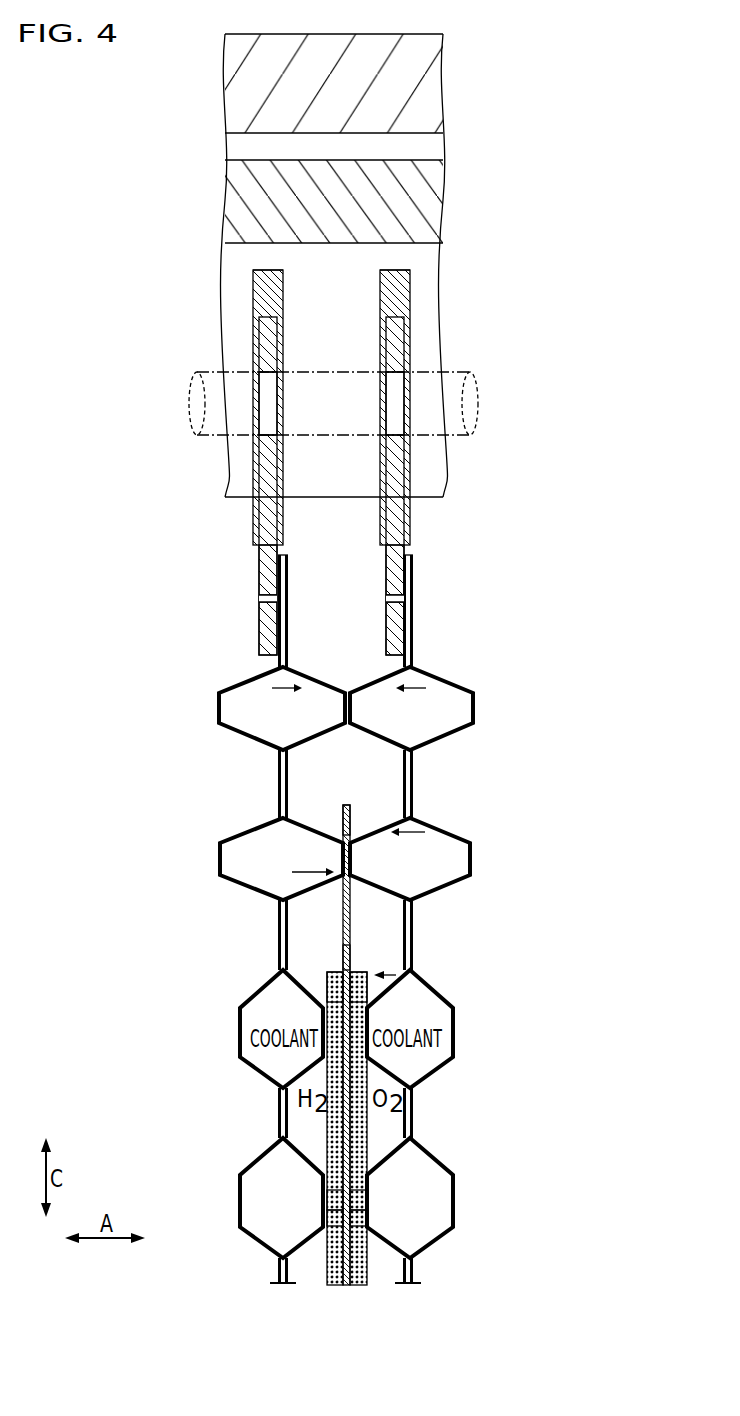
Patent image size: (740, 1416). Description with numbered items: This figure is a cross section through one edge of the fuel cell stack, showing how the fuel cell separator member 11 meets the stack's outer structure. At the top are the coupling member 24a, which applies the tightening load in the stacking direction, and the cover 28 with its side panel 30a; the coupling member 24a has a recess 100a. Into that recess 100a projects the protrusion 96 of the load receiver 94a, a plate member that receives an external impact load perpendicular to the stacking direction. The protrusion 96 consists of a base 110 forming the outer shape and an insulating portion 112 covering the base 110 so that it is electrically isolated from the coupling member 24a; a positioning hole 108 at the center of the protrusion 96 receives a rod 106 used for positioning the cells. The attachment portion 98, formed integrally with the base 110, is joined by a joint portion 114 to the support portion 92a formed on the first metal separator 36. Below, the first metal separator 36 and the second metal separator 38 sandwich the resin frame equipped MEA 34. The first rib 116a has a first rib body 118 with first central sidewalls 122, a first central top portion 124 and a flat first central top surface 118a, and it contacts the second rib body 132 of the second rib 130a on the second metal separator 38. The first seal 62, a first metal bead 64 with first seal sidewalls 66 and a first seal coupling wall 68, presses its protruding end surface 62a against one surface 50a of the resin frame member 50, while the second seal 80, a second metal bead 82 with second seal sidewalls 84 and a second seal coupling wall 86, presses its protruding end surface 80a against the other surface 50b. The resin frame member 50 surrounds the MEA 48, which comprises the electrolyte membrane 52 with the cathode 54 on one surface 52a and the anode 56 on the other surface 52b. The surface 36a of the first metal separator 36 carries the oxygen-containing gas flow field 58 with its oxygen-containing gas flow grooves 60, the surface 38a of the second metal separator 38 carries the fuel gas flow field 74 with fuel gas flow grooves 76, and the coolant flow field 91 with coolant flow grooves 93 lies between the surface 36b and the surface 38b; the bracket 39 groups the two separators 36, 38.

The fuel cell separator member 11 is at (386, 265).
The coupling member 24a is at (430, 200).
The cover 28 is at (447, 41).
The side panel 30a is at (421, 80).
The resin frame equipped MEA 34 is at (367, 1045).
The first metal separator 36 is at (278, 1272).
The surface of first metal separator 36a is at (367, 1206).
The surface of first metal separator 36b is at (367, 1216).
The second metal separator 38 is at (290, 1286).
The surface of second metal separator 38a is at (327, 1206).
The surface of second metal separator 38b is at (328, 1216).
The reactant gas flow fields 39 is at (347, 1285).
The MEA 48 is at (398, 975).
The resin frame member 50 is at (350, 950).
The one surface of resin frame member 50a is at (349, 936).
The other surface of resin frame member 50b is at (340, 958).
The electrolyte membrane 52 is at (354, 1122).
The one surface of electrolyte membrane 52a is at (356, 1030).
The other surface of electrolyte membrane 52b is at (328, 1028).
The cathode 54 is at (362, 1135).
The anode 56 is at (336, 1135).
The oxygen-containing gas flow field 58 is at (430, 1170).
The oxygen-containing gas flow grooves 60 is at (455, 1198).
The first seal 62 is at (420, 835).
The first metal bead 64 is at (455, 856).
The protruding end surface of first seal 62a is at (344, 855).
The first seal sidewalls 66 is at (410, 803).
The first seal coupling wall 68 is at (352, 857).
The fuel gas flow field 74 is at (265, 1170).
The fuel gas flow grooves 76 is at (239, 1198).
The second seal 80 is at (262, 888).
The second metal bead 82 is at (235, 863).
The protruding end surface of second seal 80a is at (352, 869).
The second seal sidewalls 84 is at (281, 803).
The second seal coupling wall 86 is at (343, 862).
The coolant flow field 91 is at (468, 1076).
The coolant flow grooves 93 is at (339, 1029).
The support portion 92a is at (278, 636).
The load receiver 94a is at (253, 272).
The protrusion 96 is at (333, 462).
The attachment portion 98 is at (270, 574).
The recess 100a is at (430, 473).
The rod 106 is at (466, 365).
The positioning hole 108 is at (393, 397).
The base 110 is at (253, 513).
The insulating portion 112 is at (266, 528).
The joint portion 114 is at (281, 598).
The first rib 116a is at (474, 704).
The first rib body 118 is at (440, 690).
The first central top surface 118a is at (343, 706).
The first central sidewalls 122 is at (373, 690).
The first central top portion 124 is at (352, 706).
The second rib 130a is at (235, 690).
The second rib body 132 is at (311, 690).